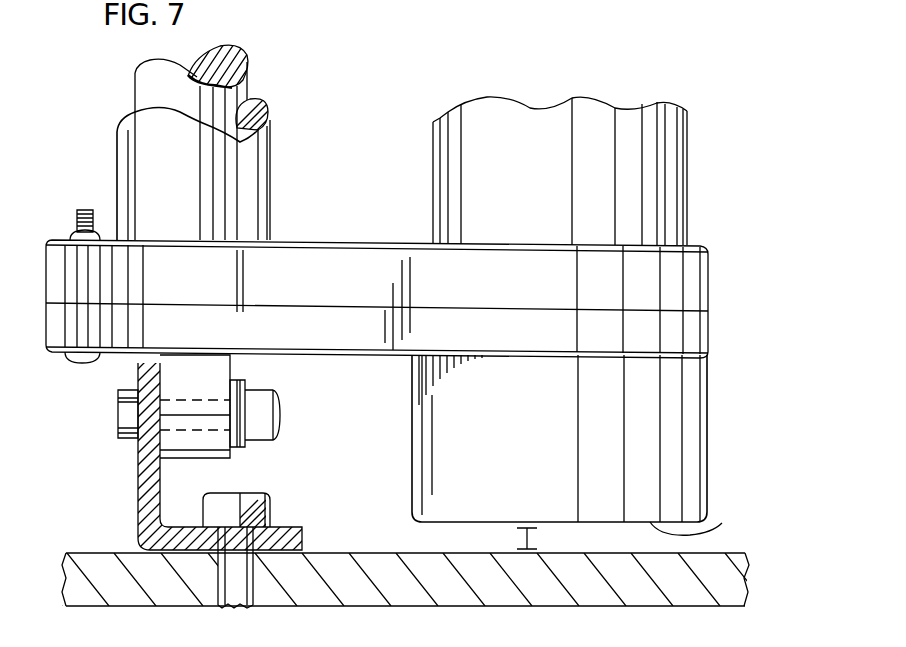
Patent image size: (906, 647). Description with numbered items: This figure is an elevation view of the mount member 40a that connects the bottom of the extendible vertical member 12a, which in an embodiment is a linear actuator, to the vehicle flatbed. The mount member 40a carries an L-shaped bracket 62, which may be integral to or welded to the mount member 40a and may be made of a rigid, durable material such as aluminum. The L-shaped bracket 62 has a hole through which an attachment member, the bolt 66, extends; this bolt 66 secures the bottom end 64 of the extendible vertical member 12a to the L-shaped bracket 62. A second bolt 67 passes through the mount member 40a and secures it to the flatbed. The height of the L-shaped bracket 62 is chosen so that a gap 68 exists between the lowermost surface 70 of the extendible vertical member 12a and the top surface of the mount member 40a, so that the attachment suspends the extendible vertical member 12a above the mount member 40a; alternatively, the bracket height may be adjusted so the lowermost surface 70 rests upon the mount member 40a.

The extendible vertical member 12a is at (338, 156).
The L-shaped bracket 62 is at (96, 488).
The bottom end 64 is at (722, 424).
The bolt 66 is at (116, 412).
The bolt 67 is at (272, 494).
The gap 68 is at (517, 540).
The lowermost surface 70 is at (702, 526).
The mount member 40a is at (700, 581).